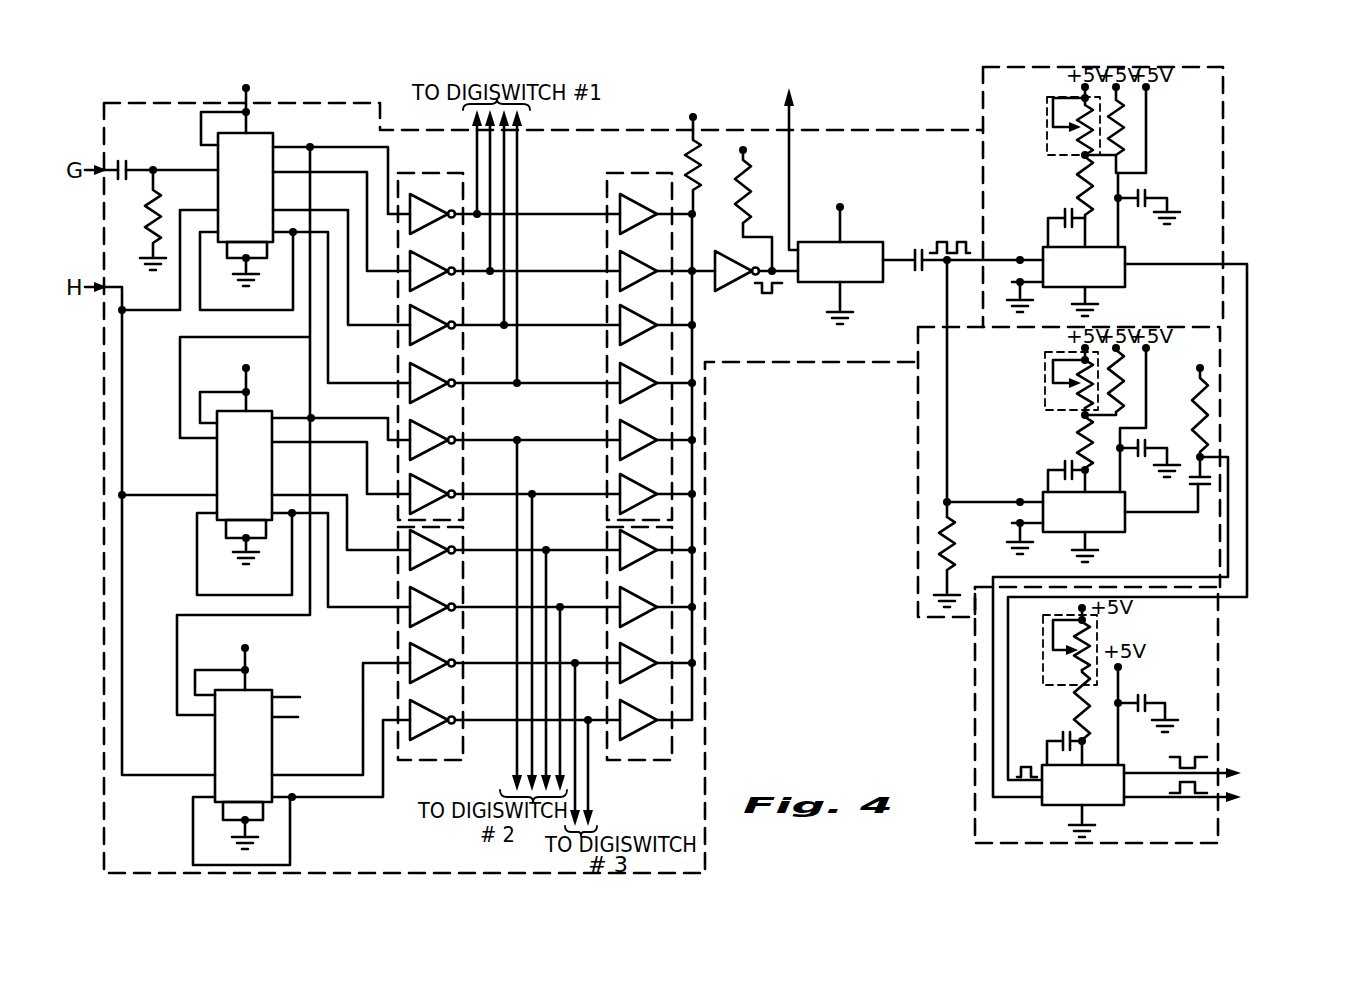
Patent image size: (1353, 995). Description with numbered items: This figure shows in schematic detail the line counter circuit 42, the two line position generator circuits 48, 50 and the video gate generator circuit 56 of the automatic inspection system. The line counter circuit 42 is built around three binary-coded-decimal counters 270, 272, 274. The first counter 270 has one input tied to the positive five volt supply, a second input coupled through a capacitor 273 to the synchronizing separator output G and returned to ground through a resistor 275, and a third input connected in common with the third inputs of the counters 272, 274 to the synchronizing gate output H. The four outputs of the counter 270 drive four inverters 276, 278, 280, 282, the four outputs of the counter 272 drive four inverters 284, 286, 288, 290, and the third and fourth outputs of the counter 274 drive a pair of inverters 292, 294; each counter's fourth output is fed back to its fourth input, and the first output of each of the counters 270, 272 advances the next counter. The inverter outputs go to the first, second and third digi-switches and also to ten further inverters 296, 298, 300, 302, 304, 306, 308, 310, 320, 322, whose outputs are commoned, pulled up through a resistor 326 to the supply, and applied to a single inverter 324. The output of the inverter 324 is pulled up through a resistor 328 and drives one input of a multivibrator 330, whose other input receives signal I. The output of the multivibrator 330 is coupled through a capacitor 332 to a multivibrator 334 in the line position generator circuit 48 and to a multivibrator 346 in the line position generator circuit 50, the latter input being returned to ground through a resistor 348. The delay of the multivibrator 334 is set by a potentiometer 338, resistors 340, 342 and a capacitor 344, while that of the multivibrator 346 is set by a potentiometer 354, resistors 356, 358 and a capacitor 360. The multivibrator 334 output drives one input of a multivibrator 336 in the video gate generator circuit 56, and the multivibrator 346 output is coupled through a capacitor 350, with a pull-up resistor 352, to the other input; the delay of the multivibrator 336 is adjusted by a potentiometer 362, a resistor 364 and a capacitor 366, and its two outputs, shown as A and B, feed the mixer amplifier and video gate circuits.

The line counter circuit 42 is at (198, 76).
The line position generator circuit 48 is at (1226, 133).
The line position generator circuit 50 is at (1222, 360).
The video gate generator circuit 56 is at (975, 718).
The binary-coded-decimal counter 270 is at (274, 140).
The binary-coded-decimal counter 272 is at (262, 410).
The capacitor 273 is at (124, 160).
The binary-coded-decimal counter 274 is at (270, 688).
The resistor 275 is at (158, 205).
The inverter 276 is at (441, 193).
The inverter 278 is at (441, 252).
The inverter 280 is at (441, 308).
The inverter 282 is at (441, 365).
The inverter 284 is at (441, 420).
The inverter 286 is at (441, 477).
The inverter 288 is at (432, 545).
The inverter 290 is at (432, 600).
The inverter 292 is at (432, 656).
The inverter 294 is at (432, 712).
The inverter 296 is at (618, 212).
The inverter 298 is at (618, 270).
The inverter 300 is at (618, 324).
The inverter 302 is at (618, 382).
The inverter 304 is at (618, 438).
The inverter 306 is at (618, 492).
The inverter 308 is at (618, 548).
The inverter 310 is at (618, 604).
The inverter 320 is at (618, 660).
The inverter 322 is at (641, 694).
The inverter 324 is at (722, 290).
The resistor 326 is at (688, 158).
The resistor 328 is at (748, 197).
The multivibrator 330 is at (848, 242).
The capacitor 332 is at (917, 250).
The multivibrator 334 is at (1127, 262).
The multivibrator 336 is at (1107, 806).
The potentiometer 338 is at (1079, 138).
The resistor 340 is at (1100, 160).
The resistor 342 is at (1080, 184).
The capacitor 344 is at (1050, 232).
The multivibrator 346 is at (1116, 533).
The resistor 348 is at (951, 548).
The capacitor 350 is at (1190, 480).
The resistor 352 is at (1194, 409).
The potentiometer 354 is at (1080, 383).
The resistor 356 is at (1114, 405).
The resistor 358 is at (1082, 440).
The capacitor 360 is at (1059, 466).
The potentiometer 362 is at (1086, 641).
The resistor 364 is at (1078, 708).
The capacitor 366 is at (1062, 735).